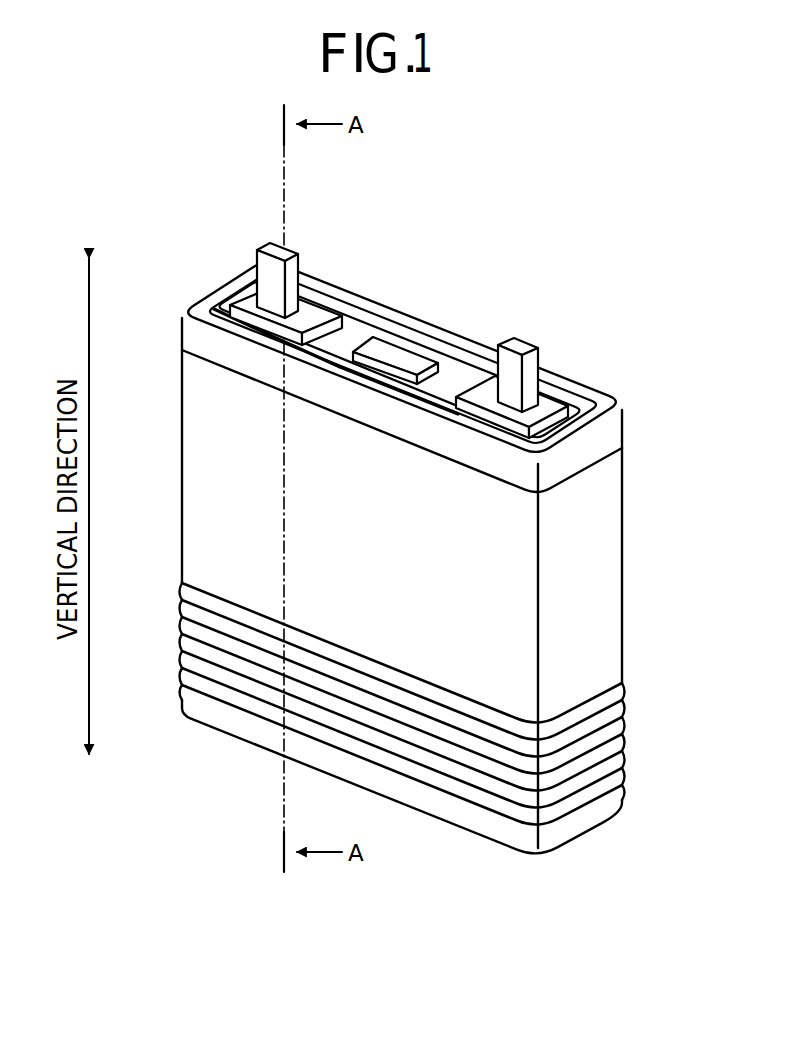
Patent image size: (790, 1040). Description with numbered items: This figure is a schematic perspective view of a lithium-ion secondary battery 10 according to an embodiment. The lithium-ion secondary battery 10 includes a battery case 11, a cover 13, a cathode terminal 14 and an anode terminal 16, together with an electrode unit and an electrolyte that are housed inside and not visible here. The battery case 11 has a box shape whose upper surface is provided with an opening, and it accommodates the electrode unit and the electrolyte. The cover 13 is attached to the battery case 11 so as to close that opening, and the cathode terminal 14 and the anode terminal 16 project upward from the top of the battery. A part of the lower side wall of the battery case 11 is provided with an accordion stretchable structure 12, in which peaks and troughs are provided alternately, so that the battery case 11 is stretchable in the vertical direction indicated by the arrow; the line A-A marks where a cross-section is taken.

The lithium-ion secondary battery 10 is at (414, 296).
The battery case 11 is at (607, 553).
The accordion stretchable structure 12 is at (241, 689).
The cover 13 is at (605, 409).
The cathode terminal 14 is at (512, 338).
The anode terminal 16 is at (271, 243).